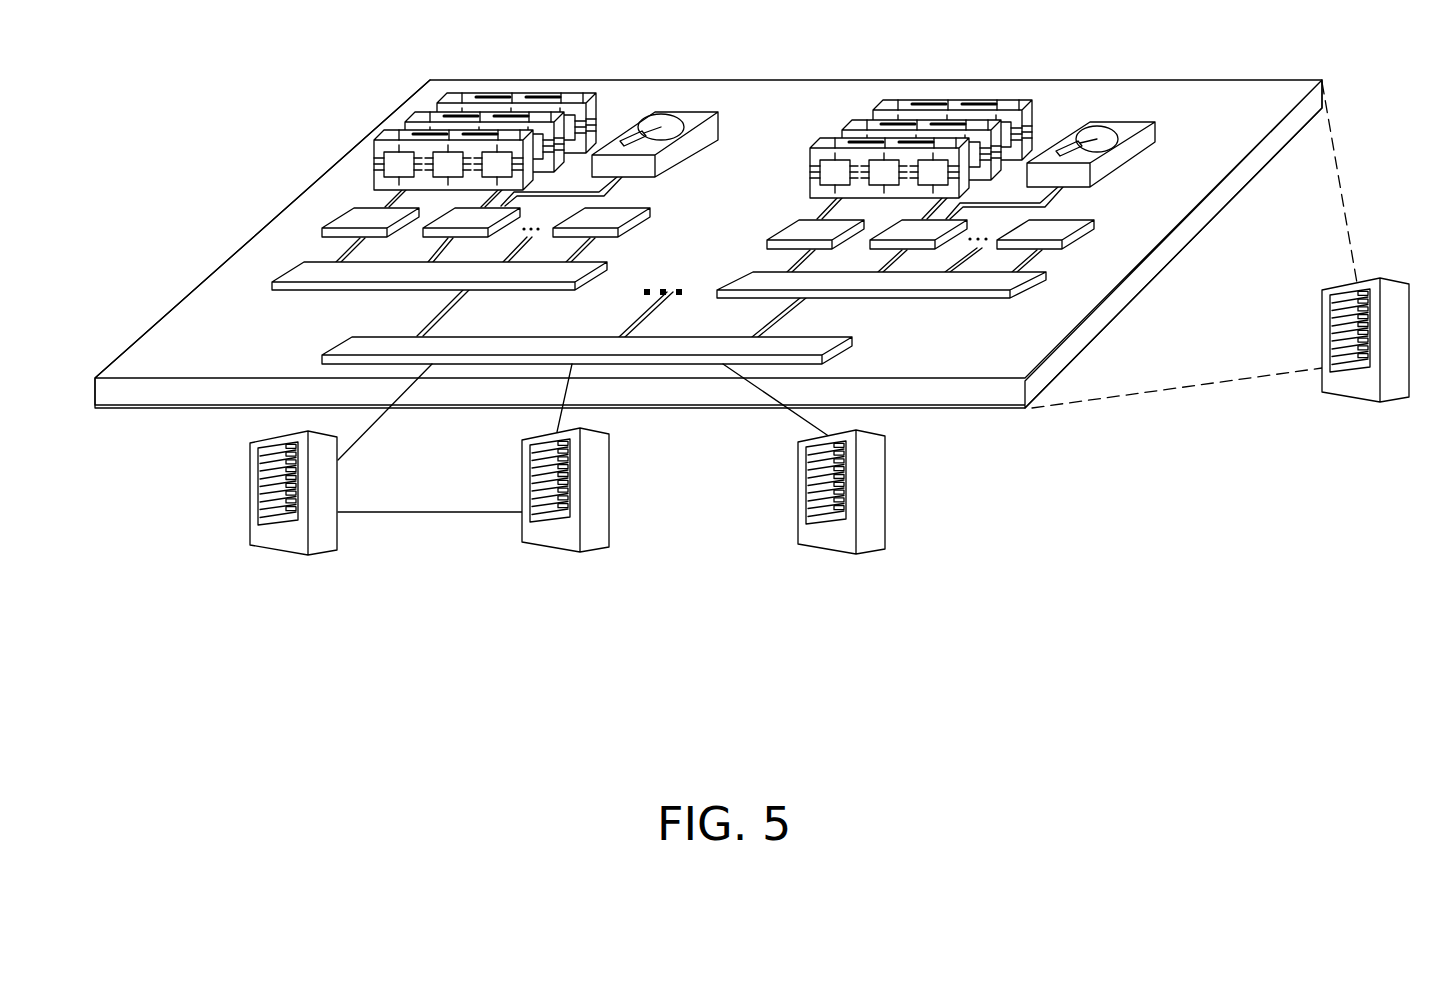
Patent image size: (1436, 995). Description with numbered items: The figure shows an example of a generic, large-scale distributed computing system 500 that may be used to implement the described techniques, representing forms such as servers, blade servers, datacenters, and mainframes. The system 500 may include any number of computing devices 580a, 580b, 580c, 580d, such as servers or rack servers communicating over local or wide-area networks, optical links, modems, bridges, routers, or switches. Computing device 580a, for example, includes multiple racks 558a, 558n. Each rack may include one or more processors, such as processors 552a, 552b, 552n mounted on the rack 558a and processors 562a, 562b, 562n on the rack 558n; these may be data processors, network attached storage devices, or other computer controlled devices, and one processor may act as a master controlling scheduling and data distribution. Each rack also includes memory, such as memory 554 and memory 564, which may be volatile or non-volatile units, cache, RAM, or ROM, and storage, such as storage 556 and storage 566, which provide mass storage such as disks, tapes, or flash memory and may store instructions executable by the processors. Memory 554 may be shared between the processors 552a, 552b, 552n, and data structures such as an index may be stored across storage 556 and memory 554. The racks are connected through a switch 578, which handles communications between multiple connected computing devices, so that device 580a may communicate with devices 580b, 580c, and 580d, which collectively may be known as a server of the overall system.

The distributed computing system 500 is at (272, 105).
The processor 552a is at (364, 220).
The processor 552b is at (432, 236).
The processor 552n is at (613, 222).
The memory 554 is at (522, 92).
The storage 556 is at (683, 112).
The rack 558a is at (310, 273).
The rack 558n is at (998, 280).
The processor 562a is at (815, 232).
The processor 562b is at (879, 251).
The processor 562n is at (1048, 232).
The memory 564 is at (957, 102).
The storage 566 is at (1117, 122).
The switch 578 is at (353, 347).
The computing device 580a is at (1322, 312).
The computing device 580b is at (250, 492).
The computing device 580c is at (522, 485).
The computing device 580d is at (798, 494).